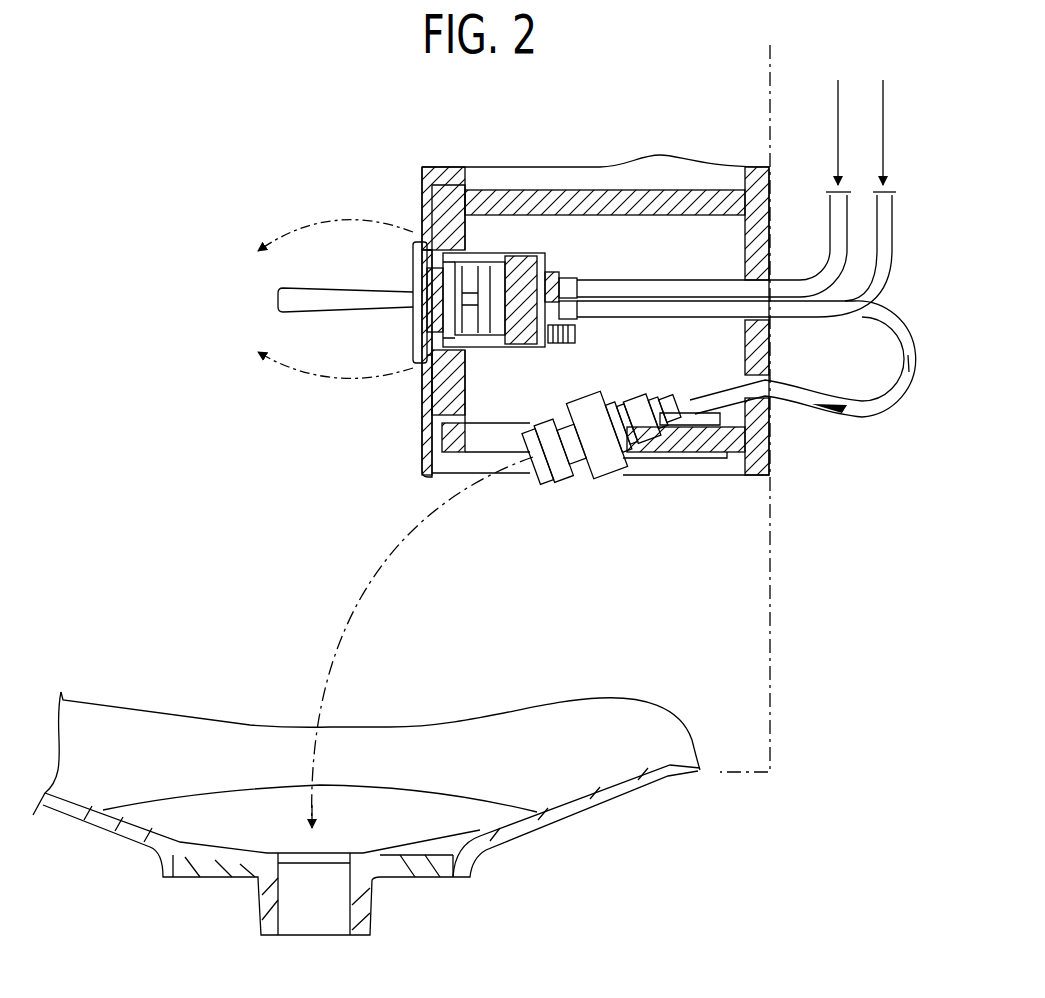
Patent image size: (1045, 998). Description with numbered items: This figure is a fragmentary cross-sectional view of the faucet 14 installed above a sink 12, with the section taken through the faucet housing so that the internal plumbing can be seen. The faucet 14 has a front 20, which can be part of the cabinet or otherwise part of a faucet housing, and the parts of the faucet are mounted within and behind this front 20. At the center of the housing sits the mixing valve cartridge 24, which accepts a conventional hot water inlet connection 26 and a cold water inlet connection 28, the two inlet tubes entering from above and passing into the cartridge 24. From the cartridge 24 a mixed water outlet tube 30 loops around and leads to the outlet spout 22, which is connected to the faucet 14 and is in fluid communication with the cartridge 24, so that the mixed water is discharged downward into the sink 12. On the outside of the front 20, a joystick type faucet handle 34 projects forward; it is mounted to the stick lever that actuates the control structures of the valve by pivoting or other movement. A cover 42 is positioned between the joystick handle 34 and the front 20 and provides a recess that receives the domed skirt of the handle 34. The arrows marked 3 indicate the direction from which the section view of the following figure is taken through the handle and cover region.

The basin bowl 12 is at (560, 817).
The valve assembly 14 is at (645, 535).
The housing 20 is at (415, 415).
The solenoid valve 22 is at (553, 485).
The mixing valve 24 is at (508, 262).
The supply tube 26 is at (893, 240).
The supply tube 28 is at (828, 230).
The tube loop 30 is at (898, 402).
The actuator rod 34 is at (278, 298).
The mounting flange 42 is at (413, 260).
The section view indicator 3 is at (322, 299).